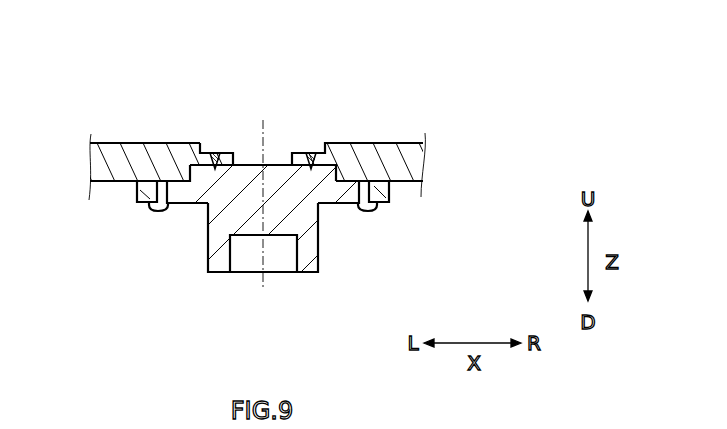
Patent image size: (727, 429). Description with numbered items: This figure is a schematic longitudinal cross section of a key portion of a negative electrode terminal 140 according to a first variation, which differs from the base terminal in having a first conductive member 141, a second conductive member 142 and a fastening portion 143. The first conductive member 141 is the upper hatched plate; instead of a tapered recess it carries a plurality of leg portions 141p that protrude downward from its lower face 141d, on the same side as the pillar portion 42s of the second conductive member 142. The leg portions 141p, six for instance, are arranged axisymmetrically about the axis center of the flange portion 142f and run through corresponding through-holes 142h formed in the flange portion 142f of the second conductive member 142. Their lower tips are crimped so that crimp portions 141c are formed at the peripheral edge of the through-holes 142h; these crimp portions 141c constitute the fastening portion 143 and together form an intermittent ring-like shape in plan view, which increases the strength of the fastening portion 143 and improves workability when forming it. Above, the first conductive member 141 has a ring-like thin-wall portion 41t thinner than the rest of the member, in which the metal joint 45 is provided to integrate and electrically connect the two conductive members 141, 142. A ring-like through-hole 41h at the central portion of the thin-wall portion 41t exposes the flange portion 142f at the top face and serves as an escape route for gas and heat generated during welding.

The negative electrode terminal 140 is at (372, 67).
The first conductive member 141 is at (389, 124).
The lower face 141d is at (93, 186).
The leg portions 141p is at (142, 192).
The crimp portions 141c is at (157, 208).
The fastening portion 143 is at (168, 176).
The through-hole 41h is at (288, 153).
The thin-wall portion 41t is at (317, 151).
The metal joint 45 is at (214, 151).
The second conductive member 142 is at (394, 255).
The flange portion 142f is at (198, 195).
The through-holes 142h is at (374, 205).
The pillar portion 42s is at (303, 224).